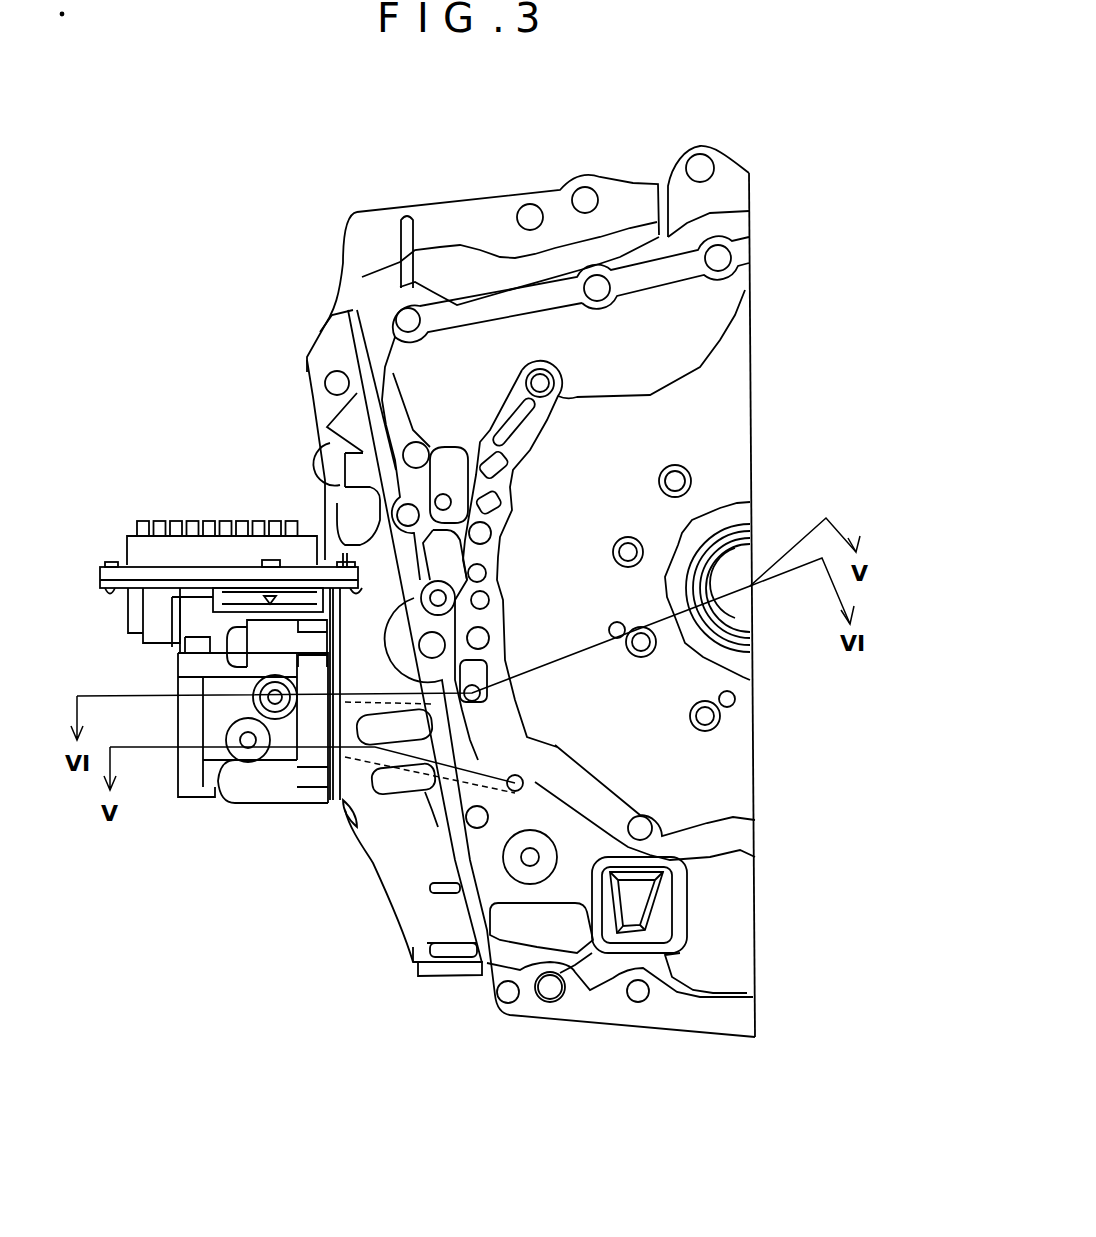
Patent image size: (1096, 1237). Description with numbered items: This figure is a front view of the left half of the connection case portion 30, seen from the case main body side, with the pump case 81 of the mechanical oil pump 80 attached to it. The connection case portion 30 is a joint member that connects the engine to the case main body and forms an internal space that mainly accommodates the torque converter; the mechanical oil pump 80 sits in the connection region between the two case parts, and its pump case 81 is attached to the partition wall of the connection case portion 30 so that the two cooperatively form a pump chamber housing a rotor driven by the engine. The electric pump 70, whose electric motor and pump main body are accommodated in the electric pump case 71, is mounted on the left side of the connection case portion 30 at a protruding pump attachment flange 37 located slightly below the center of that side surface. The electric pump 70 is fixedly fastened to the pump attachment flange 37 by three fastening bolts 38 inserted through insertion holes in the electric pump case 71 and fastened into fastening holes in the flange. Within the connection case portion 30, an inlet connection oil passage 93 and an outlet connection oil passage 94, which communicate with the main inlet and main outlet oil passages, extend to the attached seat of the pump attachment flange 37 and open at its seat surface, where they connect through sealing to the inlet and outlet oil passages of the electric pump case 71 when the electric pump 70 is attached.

The connection case portion 30 is at (407, 966).
The pump attachment flange 37 is at (373, 820).
The fastening bolts 38 is at (217, 787).
The electric pump 70 is at (218, 498).
The electric pump case 71 is at (277, 792).
The mechanical oil pump 80 is at (722, 430).
The pump case 81 is at (710, 378).
The inlet connection oil passage 93 is at (393, 780).
The outlet connection oil passage 94 is at (435, 645).